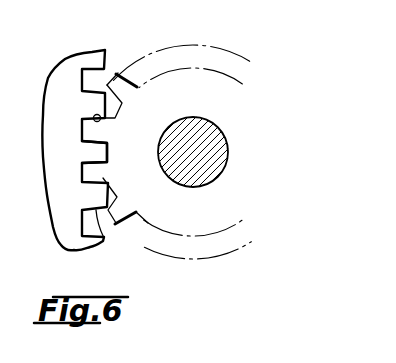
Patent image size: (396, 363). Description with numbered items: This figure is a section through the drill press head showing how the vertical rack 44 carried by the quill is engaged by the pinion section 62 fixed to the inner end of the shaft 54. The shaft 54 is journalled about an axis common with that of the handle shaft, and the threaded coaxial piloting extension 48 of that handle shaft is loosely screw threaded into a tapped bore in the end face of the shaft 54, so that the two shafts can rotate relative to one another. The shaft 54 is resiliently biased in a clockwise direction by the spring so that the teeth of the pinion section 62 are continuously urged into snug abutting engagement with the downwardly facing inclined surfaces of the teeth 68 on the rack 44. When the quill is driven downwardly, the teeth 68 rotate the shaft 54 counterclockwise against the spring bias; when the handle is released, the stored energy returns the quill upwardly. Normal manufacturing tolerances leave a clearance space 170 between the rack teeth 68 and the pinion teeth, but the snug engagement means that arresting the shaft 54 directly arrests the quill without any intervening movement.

The vertical rack 44 is at (106, 50).
The shaft 54 is at (201, 68).
The pinion section 62 is at (124, 84).
The rack teeth 68 is at (95, 115).
The clearance space 170 is at (83, 146).
The threaded coaxial piloting extension 48 is at (205, 140).